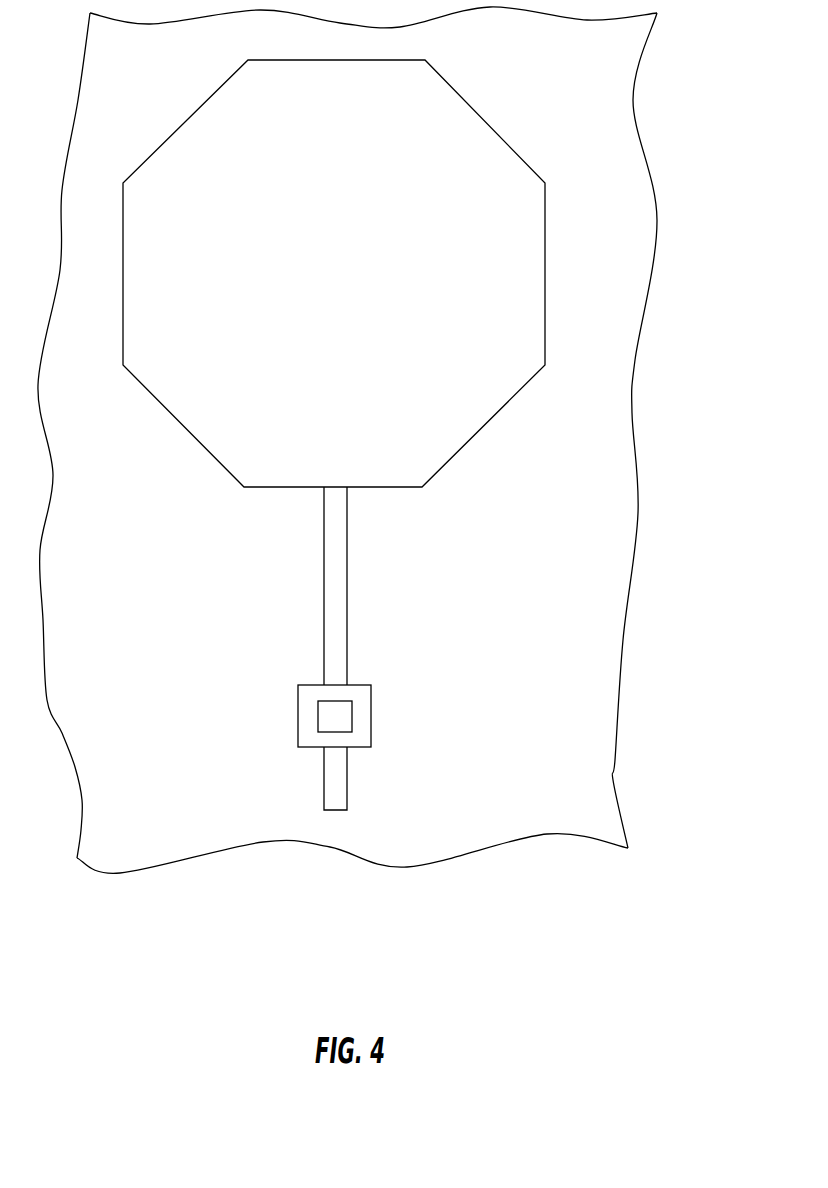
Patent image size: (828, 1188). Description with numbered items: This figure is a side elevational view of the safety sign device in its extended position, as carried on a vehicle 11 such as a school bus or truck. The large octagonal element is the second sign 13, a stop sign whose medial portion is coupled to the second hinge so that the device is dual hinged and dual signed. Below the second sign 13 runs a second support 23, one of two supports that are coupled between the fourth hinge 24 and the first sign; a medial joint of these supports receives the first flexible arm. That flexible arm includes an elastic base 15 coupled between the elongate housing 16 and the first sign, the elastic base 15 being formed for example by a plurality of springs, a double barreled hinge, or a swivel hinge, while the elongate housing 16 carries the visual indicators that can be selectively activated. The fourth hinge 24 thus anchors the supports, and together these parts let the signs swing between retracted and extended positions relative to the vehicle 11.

The vehicle 11 is at (584, 70).
The second sign 13 is at (525, 175).
The second support 23 is at (338, 580).
The elastic base 15 is at (367, 733).
The elongate housing 16 is at (343, 712).
The fourth hinge 24 is at (333, 800).